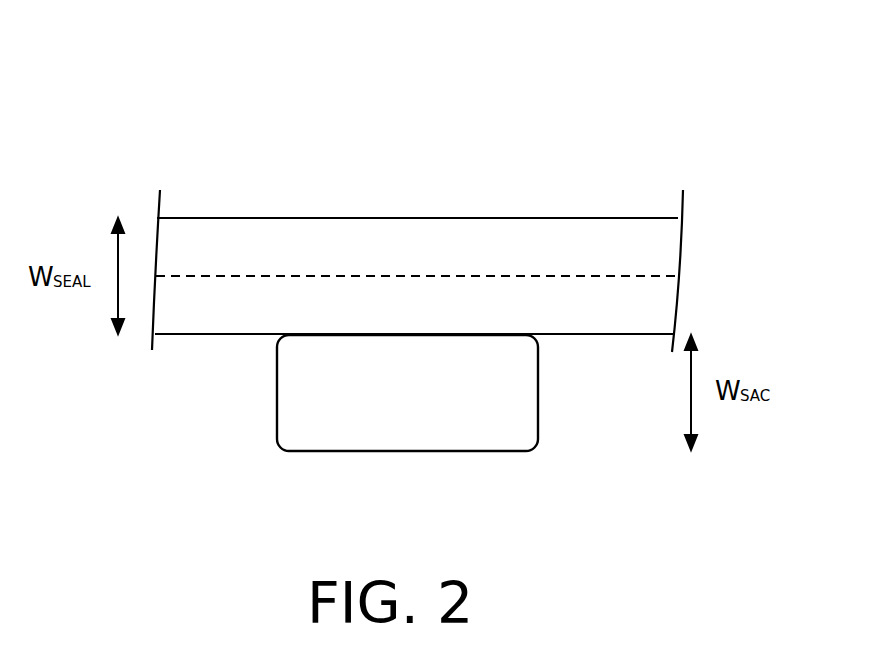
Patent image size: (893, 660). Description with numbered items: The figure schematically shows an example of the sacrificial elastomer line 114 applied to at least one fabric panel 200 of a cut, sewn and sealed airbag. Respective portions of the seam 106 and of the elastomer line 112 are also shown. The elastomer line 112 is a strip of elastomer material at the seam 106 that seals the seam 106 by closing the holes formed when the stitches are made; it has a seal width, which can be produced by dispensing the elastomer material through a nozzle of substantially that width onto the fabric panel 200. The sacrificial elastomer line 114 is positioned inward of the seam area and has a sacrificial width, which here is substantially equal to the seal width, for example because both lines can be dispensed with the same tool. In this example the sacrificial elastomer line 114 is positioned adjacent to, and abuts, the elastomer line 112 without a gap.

The fabric panel 200 is at (430, 40).
The elastomer line 112 is at (252, 217).
The seam 106 is at (548, 275).
The sacrificial elastomer line 114 is at (429, 404).